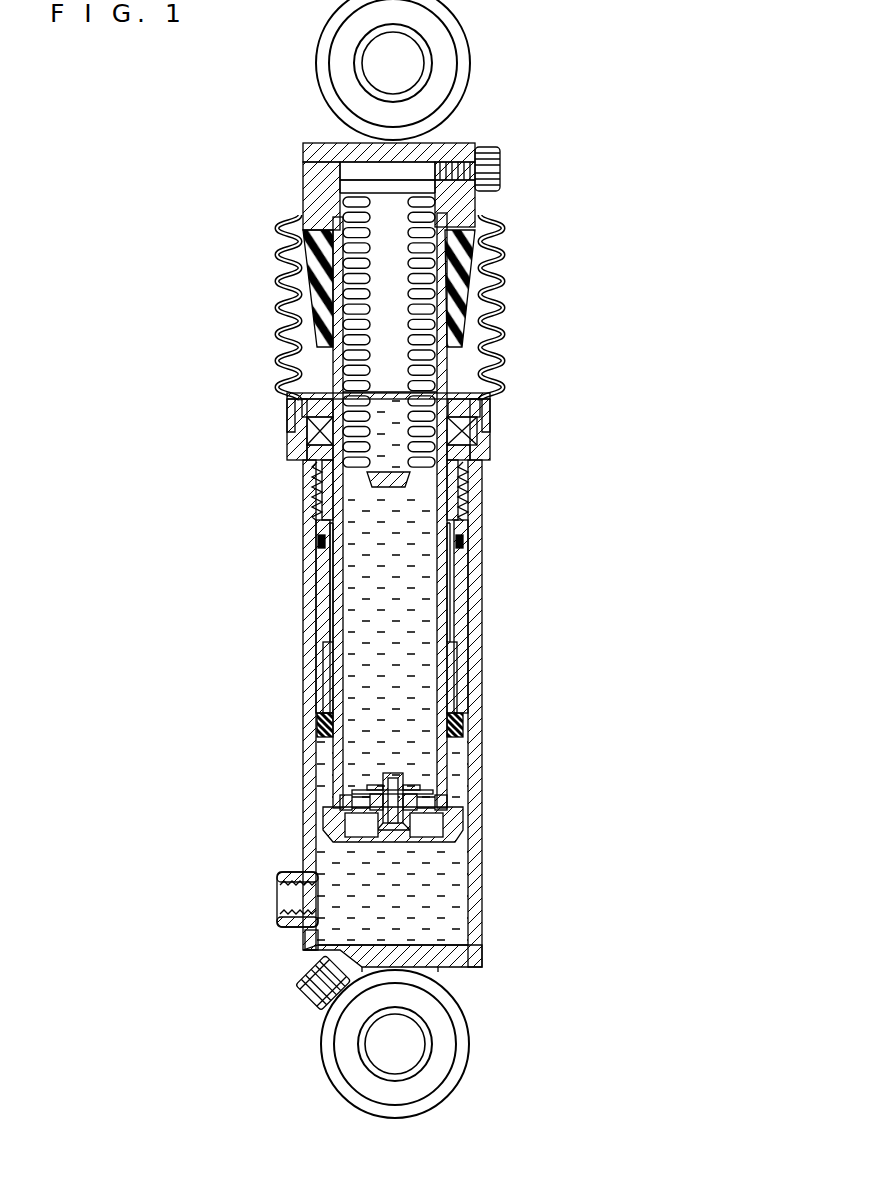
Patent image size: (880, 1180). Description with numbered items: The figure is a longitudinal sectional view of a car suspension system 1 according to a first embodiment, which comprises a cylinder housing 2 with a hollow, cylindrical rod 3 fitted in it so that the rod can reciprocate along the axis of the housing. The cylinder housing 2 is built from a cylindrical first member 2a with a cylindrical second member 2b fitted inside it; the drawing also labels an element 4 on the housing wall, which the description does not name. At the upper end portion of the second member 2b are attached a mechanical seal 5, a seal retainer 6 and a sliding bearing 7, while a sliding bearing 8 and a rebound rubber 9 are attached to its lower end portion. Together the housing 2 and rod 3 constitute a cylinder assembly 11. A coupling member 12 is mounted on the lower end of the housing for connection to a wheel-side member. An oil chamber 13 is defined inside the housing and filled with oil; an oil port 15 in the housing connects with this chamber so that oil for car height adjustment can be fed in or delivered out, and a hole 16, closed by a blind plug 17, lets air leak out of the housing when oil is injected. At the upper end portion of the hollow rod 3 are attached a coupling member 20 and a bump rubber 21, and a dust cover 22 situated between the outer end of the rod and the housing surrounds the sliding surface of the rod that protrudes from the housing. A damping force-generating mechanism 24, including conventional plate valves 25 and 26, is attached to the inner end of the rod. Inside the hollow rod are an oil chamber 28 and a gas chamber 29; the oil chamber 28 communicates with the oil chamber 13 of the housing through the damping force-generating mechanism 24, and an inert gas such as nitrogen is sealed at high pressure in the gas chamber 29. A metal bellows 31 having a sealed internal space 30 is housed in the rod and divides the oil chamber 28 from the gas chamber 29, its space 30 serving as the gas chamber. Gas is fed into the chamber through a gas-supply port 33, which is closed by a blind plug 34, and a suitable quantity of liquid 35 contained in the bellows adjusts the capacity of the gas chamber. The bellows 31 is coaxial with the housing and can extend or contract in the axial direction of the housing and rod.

The car suspension system 1 is at (555, 226).
The cylinder housing 2 is at (487, 650).
The cylindrical first member 2a is at (470, 605).
The cylindrical second member 2b is at (462, 572).
The rod 3 is at (441, 365).
The passage 4 is at (313, 548).
The mechanical seal 5 is at (471, 432).
The seal retainer 6 is at (481, 407).
The sliding bearing 7 is at (452, 490).
The sliding bearing 8 is at (330, 698).
The rebound rubber 9 is at (320, 728).
The cylinder assembly 11 is at (292, 613).
The coupling member 12 is at (470, 1050).
The oil chamber 13 is at (450, 885).
The oil port 15 is at (288, 900).
The hole 16 is at (340, 943).
The blind plug 17 is at (315, 998).
The coupling member 20 is at (318, 47).
The bump rubber 21 is at (312, 318).
The dust cover 22 is at (273, 266).
The damping force-generating mechanism 24 is at (355, 775).
The plate valve 25 is at (416, 790).
The plate valve 26 is at (440, 835).
The oil chamber 28 is at (318, 537).
The gas chamber 29 is at (385, 226).
The sealed internal space 30 is at (382, 190).
The metal bellows 31 is at (330, 373).
The gas-supply port 33 is at (458, 157).
The blind plug 34 is at (500, 170).
The liquid 35 is at (313, 478).